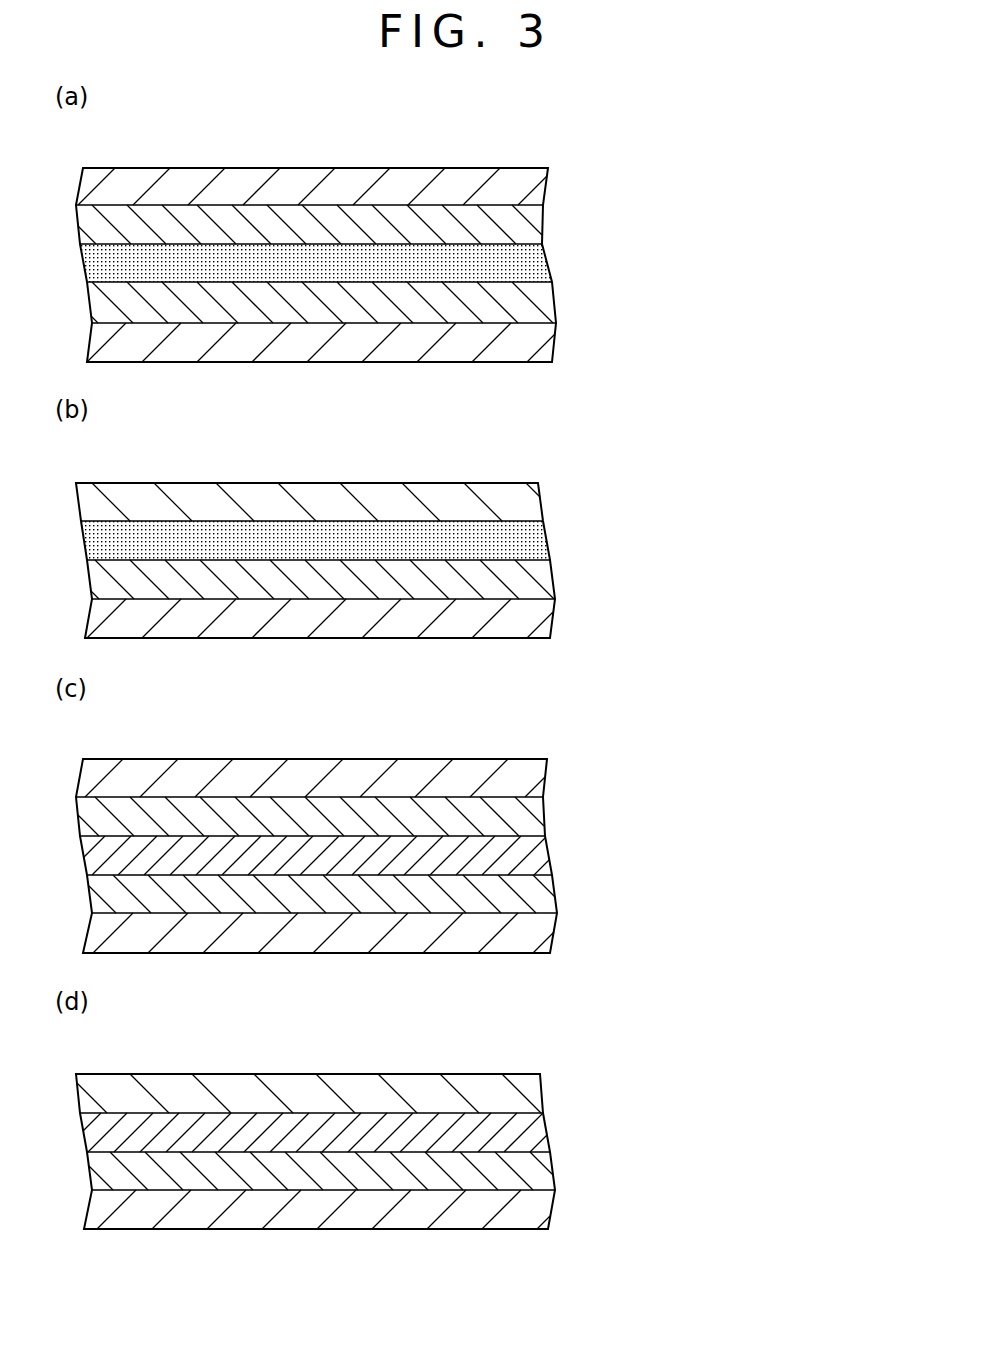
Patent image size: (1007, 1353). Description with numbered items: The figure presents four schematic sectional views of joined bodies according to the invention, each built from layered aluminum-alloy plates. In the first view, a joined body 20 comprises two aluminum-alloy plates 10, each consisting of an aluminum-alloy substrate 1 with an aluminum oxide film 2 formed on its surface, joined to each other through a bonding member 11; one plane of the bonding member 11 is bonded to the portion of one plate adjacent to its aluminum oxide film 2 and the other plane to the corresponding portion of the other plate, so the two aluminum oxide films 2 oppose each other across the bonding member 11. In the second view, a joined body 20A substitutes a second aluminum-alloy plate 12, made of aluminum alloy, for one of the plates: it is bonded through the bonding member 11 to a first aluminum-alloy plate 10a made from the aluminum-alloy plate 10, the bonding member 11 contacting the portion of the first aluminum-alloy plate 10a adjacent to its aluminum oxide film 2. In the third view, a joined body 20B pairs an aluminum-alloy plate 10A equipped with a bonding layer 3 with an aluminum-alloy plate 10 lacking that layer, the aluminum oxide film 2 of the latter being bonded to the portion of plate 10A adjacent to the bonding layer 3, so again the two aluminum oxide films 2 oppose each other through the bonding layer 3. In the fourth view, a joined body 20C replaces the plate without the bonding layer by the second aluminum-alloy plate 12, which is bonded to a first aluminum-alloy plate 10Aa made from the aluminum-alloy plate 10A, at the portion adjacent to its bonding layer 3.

The aluminum-alloy substrate 1 is at (522, 187).
The aluminum oxide film 2 is at (522, 224).
The bonding layer 3 is at (522, 855).
The aluminum-alloy plate 10 is at (606, 175).
The first aluminum-alloy plate 10a is at (606, 567).
The aluminum-alloy plate equipped with bonding layer 10A is at (606, 843).
The first aluminum-alloy plate 10Aa is at (606, 1118).
The bonding member 11 is at (523, 263).
The second aluminum-alloy plate 12 is at (522, 502).
The joined body 20 is at (537, 132).
The joined body 20A is at (537, 446).
The joined body 20B is at (537, 723).
The joined body 20C is at (537, 1038).